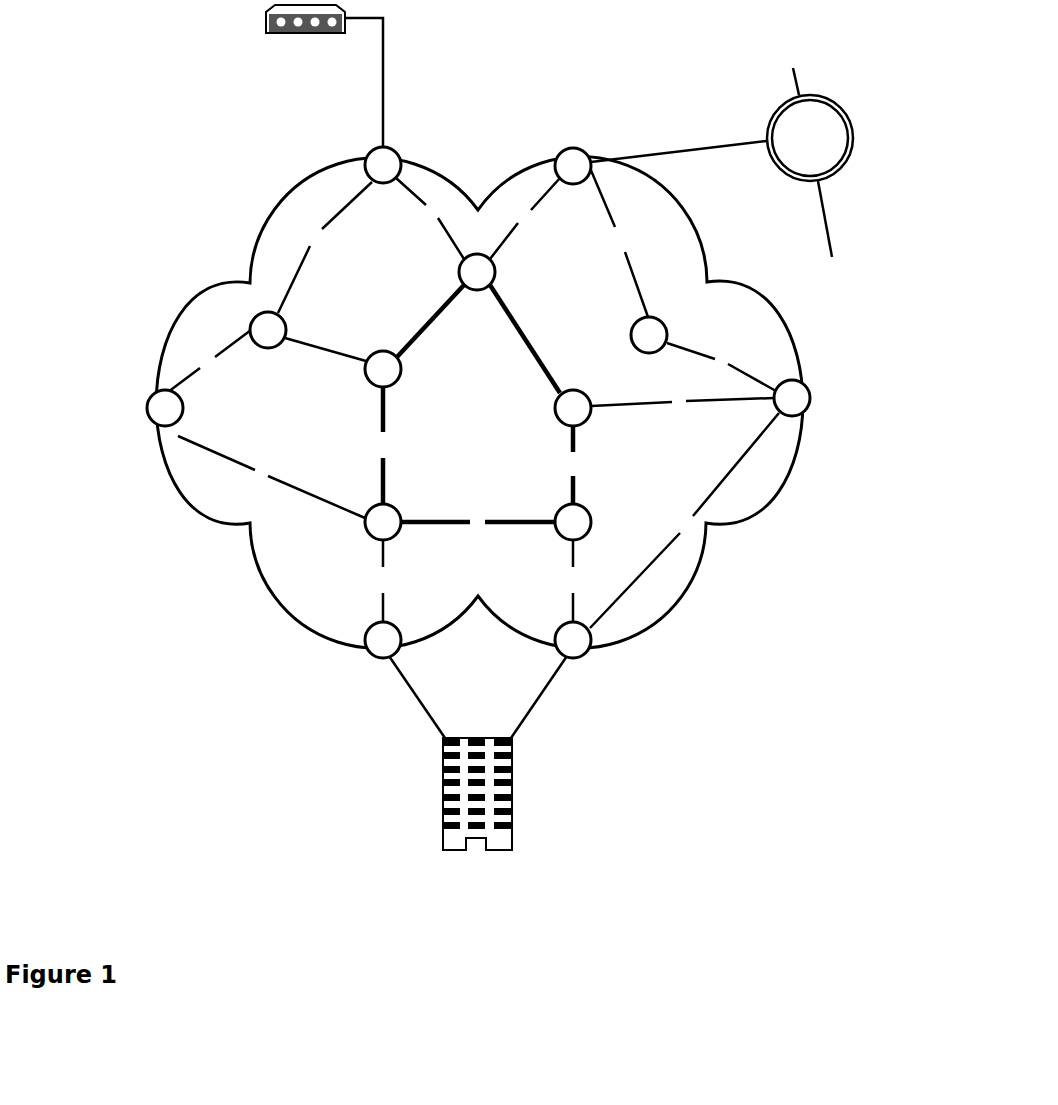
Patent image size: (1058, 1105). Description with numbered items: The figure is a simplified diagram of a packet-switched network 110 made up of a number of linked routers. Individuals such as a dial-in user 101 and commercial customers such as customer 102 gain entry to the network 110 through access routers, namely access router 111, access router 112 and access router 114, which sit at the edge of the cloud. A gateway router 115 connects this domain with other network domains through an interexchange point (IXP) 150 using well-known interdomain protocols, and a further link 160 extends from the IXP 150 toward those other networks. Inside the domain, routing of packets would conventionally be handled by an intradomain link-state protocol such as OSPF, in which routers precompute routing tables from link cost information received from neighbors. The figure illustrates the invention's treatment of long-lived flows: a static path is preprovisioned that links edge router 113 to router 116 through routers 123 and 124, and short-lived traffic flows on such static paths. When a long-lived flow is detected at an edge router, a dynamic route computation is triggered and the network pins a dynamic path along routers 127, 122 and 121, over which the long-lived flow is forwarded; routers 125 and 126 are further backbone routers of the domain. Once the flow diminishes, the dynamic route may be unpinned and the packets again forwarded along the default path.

The individual 101 is at (295, 44).
The commercial customer 102 is at (474, 832).
The network 110 is at (479, 402).
The access router 111 is at (393, 155).
The access router 112 is at (382, 667).
The edge router 113 is at (145, 408).
The access router 114 is at (583, 653).
The gateway router 115 is at (629, 148).
The router 116 is at (814, 398).
The router 121 is at (491, 272).
The router 122 is at (400, 369).
The router 123 is at (393, 511).
The router 124 is at (589, 519).
The router 125 is at (582, 400).
The router 126 is at (661, 329).
The router 127 is at (266, 351).
The interexchange point (IXP) 150 is at (810, 124).
The link to other networks 160 is at (836, 239).